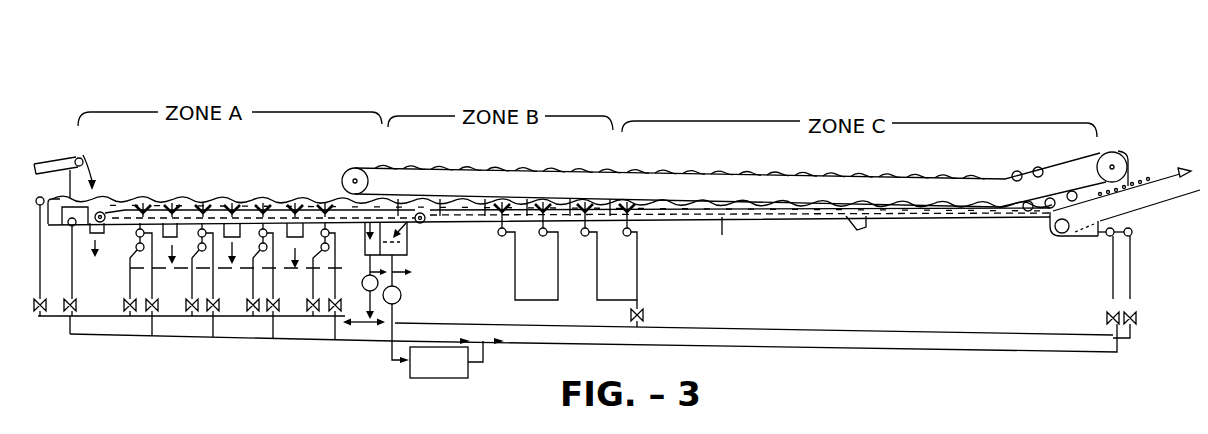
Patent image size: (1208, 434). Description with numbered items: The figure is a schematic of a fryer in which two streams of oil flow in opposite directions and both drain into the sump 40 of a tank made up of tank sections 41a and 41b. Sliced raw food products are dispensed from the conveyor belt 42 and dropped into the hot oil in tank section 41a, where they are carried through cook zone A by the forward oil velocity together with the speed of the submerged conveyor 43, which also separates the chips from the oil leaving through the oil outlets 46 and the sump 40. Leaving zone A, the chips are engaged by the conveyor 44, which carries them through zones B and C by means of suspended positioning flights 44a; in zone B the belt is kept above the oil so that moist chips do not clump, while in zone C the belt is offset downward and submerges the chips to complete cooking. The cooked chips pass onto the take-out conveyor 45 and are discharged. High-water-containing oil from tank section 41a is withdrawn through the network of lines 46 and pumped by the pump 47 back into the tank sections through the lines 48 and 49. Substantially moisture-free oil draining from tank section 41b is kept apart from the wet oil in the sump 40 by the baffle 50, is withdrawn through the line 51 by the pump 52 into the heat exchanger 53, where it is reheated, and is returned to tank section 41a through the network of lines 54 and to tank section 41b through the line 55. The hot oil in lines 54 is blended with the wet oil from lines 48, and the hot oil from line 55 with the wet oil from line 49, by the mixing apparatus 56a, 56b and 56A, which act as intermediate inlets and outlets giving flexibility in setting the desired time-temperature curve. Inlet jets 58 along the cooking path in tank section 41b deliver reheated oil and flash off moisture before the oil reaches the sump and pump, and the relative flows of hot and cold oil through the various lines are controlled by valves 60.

The sump 40 is at (407, 256).
The tank section 41a is at (43, 221).
The tank section 41b is at (750, 217).
The conveyor belt 42 is at (62, 157).
The submerged conveyor 43 is at (105, 197).
The conveyor 44 is at (398, 166).
The suspended positioning flights 44a is at (570, 201).
The take-out conveyor 45 is at (1163, 180).
The oil outlets 46 is at (100, 256).
The pump 47 is at (362, 284).
The lines 48 is at (130, 270).
The line 49 is at (684, 326).
The baffle 50 is at (407, 245).
The line 51 is at (400, 283).
The pump 52 is at (402, 303).
The heat exchanger 53 is at (452, 372).
The network of lines 54 is at (75, 291).
The line 55 is at (522, 343).
The mixing apparatus 56a is at (199, 244).
The mixing apparatus 56b is at (202, 232).
The mixing apparatus 56A is at (1132, 232).
The inlet jets 58 is at (626, 237).
The valves 60 is at (1158, 324).